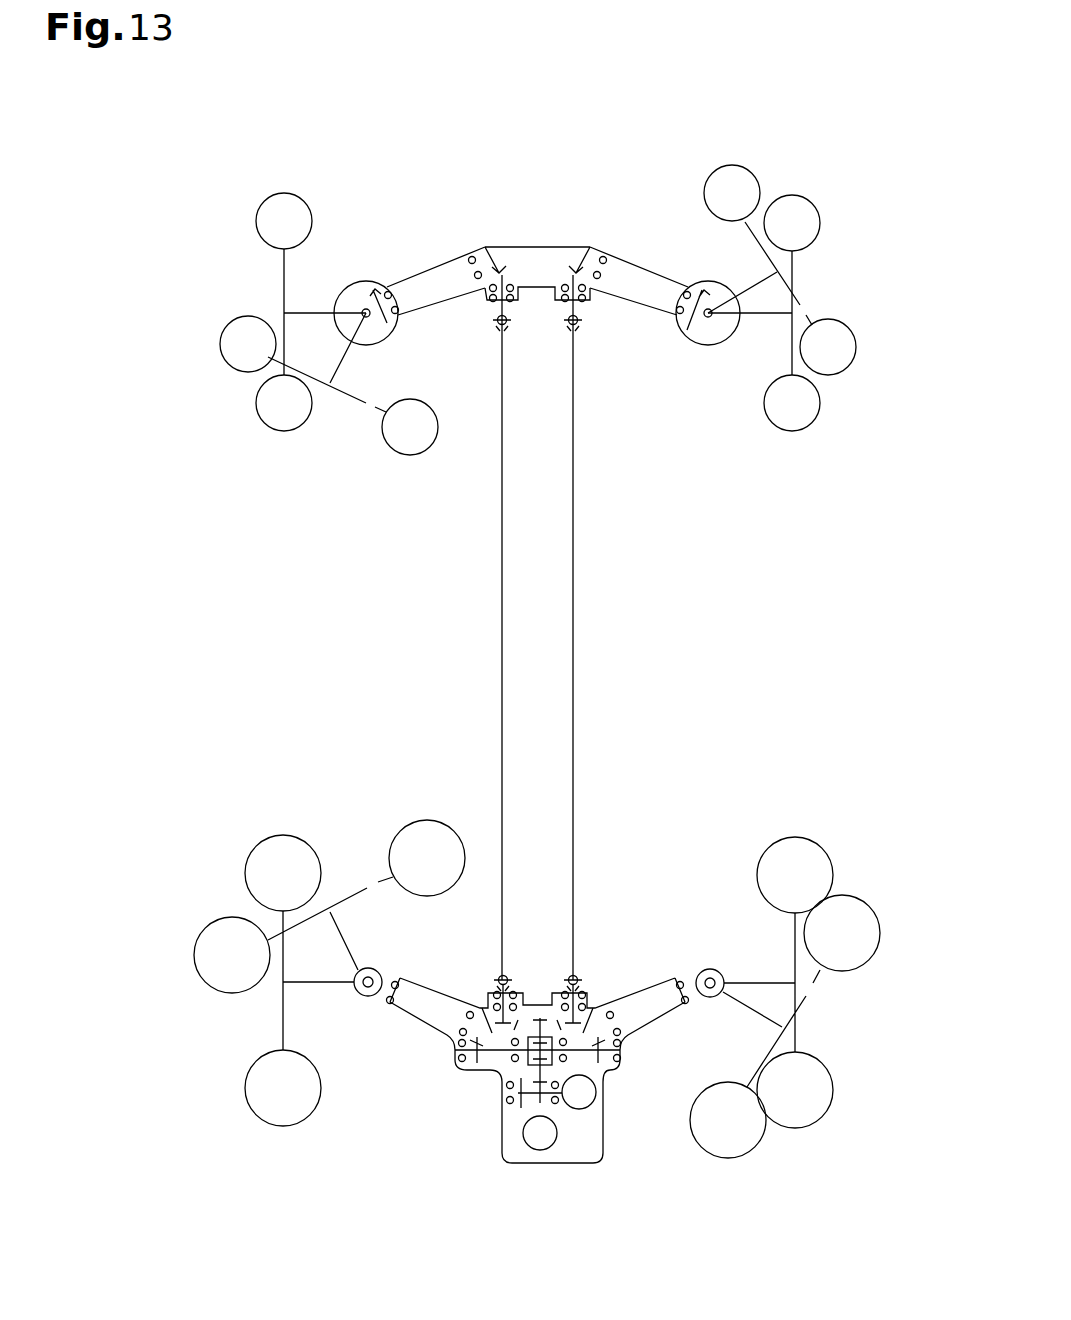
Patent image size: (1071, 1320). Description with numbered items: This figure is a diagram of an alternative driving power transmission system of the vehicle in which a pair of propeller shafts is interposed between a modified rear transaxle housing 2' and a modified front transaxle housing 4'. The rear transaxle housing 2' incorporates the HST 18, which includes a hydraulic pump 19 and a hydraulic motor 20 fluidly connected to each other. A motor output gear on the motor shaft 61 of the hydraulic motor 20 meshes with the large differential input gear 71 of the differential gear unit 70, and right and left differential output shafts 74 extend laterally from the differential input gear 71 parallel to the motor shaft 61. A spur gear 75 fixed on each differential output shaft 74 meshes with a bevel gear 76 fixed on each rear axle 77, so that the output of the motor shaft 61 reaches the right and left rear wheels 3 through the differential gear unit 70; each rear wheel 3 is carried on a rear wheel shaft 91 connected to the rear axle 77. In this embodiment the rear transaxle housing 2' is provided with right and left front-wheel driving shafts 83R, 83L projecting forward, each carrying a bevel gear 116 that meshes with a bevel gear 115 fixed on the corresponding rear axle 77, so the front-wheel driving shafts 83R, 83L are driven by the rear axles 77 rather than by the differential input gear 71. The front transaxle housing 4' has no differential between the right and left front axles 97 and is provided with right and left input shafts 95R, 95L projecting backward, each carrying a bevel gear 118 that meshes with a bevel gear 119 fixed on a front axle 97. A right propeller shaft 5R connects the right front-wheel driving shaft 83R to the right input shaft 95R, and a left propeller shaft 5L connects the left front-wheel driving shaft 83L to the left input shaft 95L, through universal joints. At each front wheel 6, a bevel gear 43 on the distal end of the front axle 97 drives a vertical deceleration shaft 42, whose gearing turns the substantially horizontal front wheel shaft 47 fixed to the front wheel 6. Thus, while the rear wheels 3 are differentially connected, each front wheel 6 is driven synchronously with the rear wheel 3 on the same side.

The front wheel 6 is at (279, 194).
The front transaxle housing 4' is at (446, 200).
The bevel gear 119 is at (487, 245).
The bevel gear 118 is at (515, 268).
The front axle 97 is at (432, 268).
The front wheel shaft 47 is at (319, 313).
The left input shaft 95L is at (497, 315).
The right input shaft 95R is at (578, 316).
The deceleration shaft 42 is at (368, 319).
The bevel gear 43 is at (690, 331).
The left propeller shaft 5L is at (500, 640).
The right propeller shaft 5R is at (575, 657).
The rear wheel 3 is at (283, 835).
The left front-wheel driving shaft 83L is at (500, 975).
The right front-wheel driving shaft 83R is at (580, 975).
The bevel gear 116 is at (588, 993).
The bevel gear 115 is at (598, 1020).
The rear axle 77 is at (422, 1004).
The bevel gear 76 is at (473, 1007).
The differential input gear 71 is at (540, 1018).
The rear wheel shaft 91 is at (341, 983).
The spur gear 75 is at (447, 1050).
The differential output shaft 74 is at (467, 1072).
The differential gear unit 70 is at (509, 1076).
The hydraulic motor 20 is at (597, 1092).
The rear transaxle housing 2' is at (448, 1145).
The motor shaft 61 is at (530, 1093).
The hydraulic pump 19 is at (540, 1150).
The HST 18 is at (591, 1132).